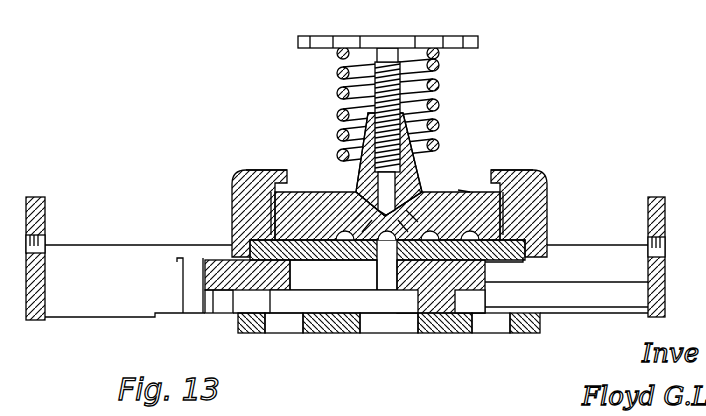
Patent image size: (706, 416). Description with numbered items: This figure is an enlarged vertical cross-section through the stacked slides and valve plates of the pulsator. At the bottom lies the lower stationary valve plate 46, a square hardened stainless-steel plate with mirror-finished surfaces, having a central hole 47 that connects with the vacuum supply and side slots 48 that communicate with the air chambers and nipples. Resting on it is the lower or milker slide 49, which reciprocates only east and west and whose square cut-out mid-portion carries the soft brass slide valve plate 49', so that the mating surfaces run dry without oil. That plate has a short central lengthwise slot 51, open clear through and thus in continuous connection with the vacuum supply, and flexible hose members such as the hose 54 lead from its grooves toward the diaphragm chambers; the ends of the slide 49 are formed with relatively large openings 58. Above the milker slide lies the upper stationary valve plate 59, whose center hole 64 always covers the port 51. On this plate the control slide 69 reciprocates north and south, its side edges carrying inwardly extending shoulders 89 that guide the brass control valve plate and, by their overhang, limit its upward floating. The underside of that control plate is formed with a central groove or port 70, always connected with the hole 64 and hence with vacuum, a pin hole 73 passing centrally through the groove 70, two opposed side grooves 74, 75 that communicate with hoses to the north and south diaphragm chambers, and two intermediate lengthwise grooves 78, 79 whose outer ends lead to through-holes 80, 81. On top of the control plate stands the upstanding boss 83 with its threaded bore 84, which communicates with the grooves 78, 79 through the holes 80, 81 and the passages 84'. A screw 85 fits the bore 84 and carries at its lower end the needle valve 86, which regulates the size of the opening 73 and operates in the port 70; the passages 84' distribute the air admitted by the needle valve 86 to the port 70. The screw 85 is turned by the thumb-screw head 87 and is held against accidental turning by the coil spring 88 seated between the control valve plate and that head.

The thumb-screw head 87 is at (480, 42).
The coil spring 88 is at (442, 82).
The screw 85 is at (441, 101).
The upstanding boss 83 is at (445, 136).
The threaded bore 84 is at (450, 167).
The passages 84' is at (454, 188).
The needle valve 86 is at (458, 190).
The inwardly extending shoulders 89 is at (530, 172).
The control slide 69 is at (540, 193).
The side groove 75 is at (500, 222).
The lengthwise groove 78 is at (550, 240).
The groove 70 is at (365, 222).
The side groove 74 is at (232, 222).
The lengthwise groove 79 is at (340, 252).
The through-hole 80 is at (382, 252).
The center hole 64 is at (344, 303).
The pin hole 73 is at (372, 284).
The through-hole 81 is at (452, 262).
The upper stationary valve plate 59 is at (527, 261).
The openings 58 is at (332, 281).
The flexible hose member 54 is at (640, 293).
The lower or milker slide 49 is at (657, 242).
The slide valve plate 49' is at (130, 271).
The side slots 48 is at (278, 328).
The lengthwise slot 51 is at (326, 330).
The lower stationary valve plate 46 is at (355, 330).
The central hole 47 is at (402, 330).